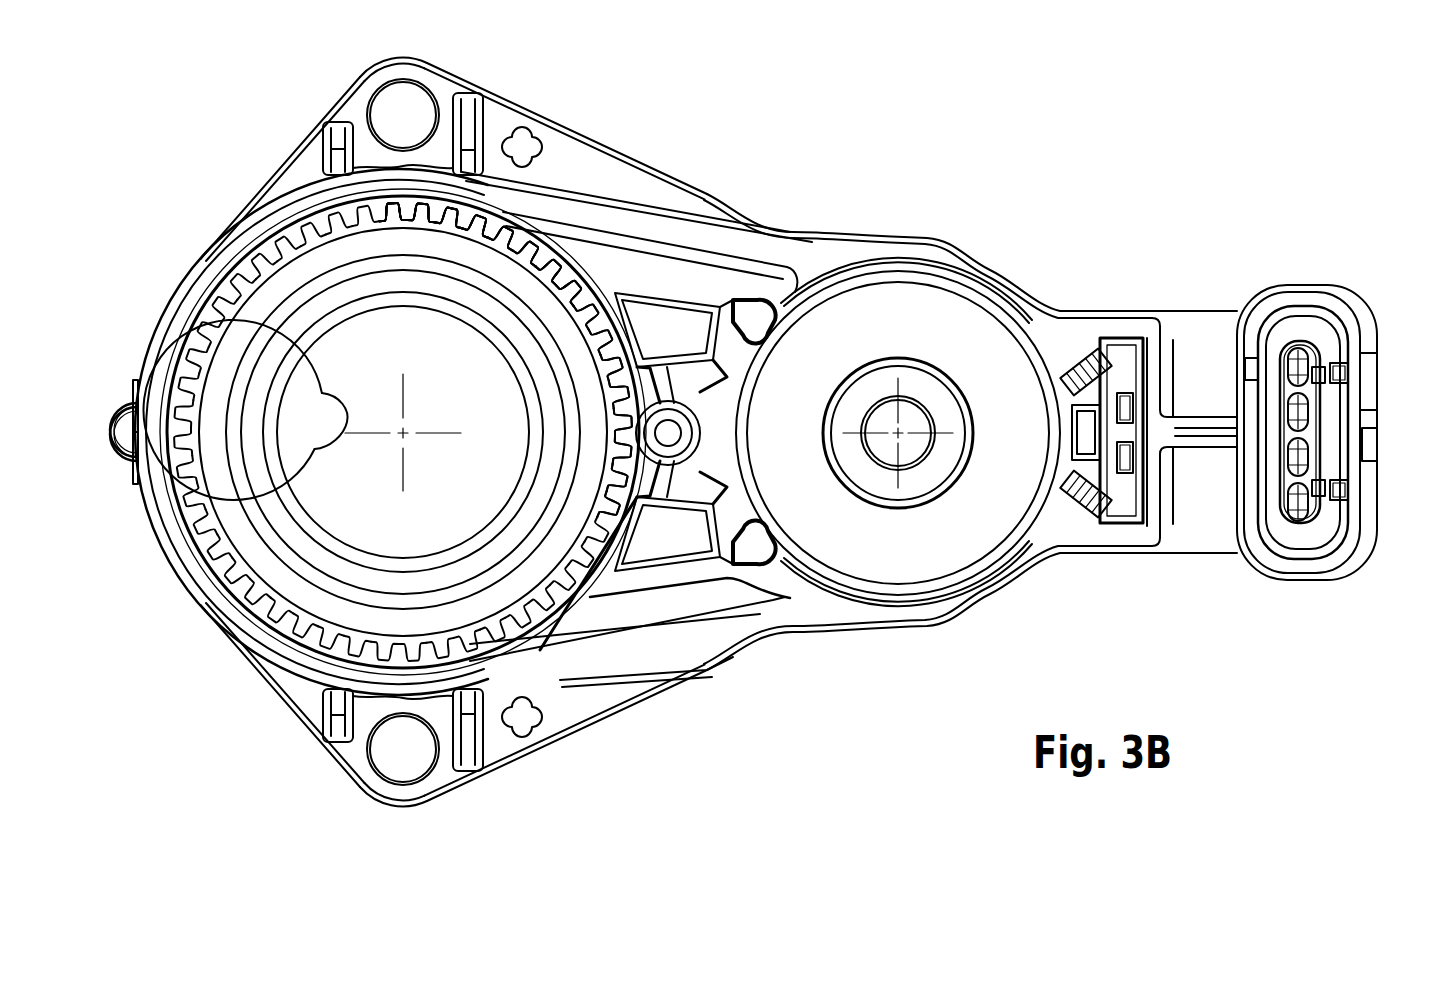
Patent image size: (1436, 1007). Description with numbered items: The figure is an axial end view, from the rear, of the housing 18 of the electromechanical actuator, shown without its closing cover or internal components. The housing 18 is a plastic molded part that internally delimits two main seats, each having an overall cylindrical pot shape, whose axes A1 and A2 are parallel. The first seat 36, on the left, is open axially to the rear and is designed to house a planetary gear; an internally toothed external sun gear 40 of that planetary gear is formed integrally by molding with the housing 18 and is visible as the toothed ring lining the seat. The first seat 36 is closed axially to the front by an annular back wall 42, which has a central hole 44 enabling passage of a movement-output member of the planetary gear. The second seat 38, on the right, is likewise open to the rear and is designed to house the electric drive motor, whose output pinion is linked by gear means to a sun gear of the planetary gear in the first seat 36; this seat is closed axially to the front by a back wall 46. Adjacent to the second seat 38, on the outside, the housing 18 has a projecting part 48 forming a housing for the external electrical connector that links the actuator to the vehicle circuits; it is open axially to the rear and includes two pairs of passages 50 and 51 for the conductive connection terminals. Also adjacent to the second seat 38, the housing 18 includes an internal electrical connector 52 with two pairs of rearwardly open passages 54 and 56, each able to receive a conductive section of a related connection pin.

The housing 18 is at (985, 221).
The first seat 36 is at (540, 298).
The second seat 38 is at (898, 433).
The external sun gear 40 is at (292, 283).
The annular back wall 42 is at (377, 535).
The central hole 44 is at (400, 434).
The back wall 46 is at (875, 545).
The projecting part 48 is at (1335, 290).
The passages 50 is at (1305, 412).
The passages 51 is at (1305, 358).
The internal electrical connector 52 is at (1133, 345).
The passages 54 is at (1092, 380).
The passages 56 is at (1128, 408).
The axis A1 is at (400, 434).
The axis A2 is at (900, 434).